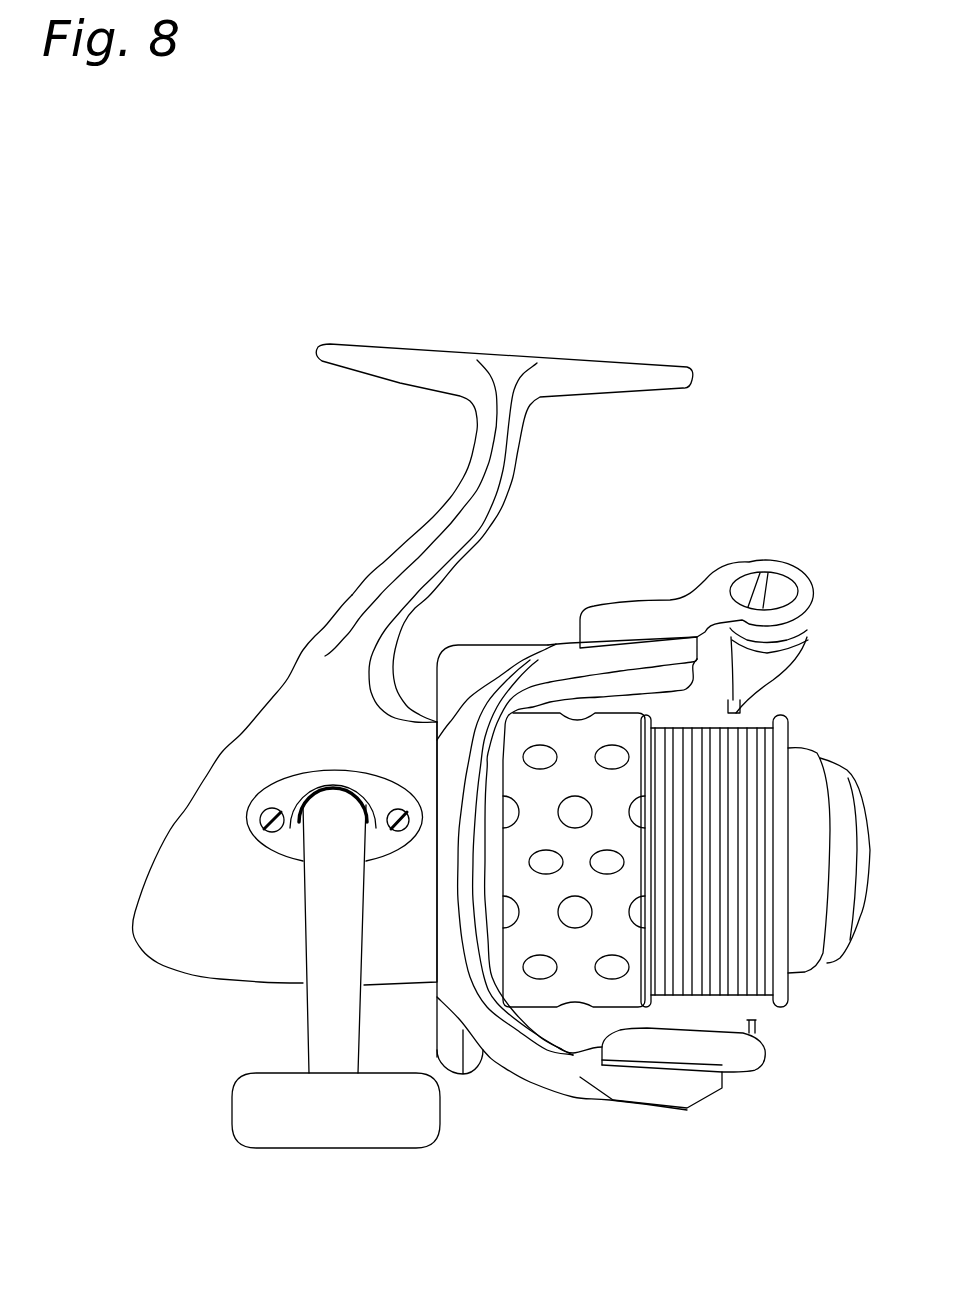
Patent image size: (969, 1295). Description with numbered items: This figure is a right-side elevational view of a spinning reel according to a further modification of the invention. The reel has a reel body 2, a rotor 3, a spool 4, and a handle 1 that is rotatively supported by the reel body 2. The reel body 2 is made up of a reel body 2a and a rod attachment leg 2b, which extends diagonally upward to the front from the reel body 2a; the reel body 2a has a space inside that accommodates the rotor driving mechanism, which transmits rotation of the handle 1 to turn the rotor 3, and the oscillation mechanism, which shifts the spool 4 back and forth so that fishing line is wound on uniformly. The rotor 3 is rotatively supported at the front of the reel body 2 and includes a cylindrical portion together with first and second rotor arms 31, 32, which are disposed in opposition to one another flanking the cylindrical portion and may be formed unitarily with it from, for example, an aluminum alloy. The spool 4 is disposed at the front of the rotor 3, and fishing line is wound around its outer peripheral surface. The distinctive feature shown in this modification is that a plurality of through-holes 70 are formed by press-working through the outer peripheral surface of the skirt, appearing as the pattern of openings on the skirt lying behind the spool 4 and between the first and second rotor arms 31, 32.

The handle 1 is at (330, 1019).
The reel body 2 is at (412, 664).
The reel body 2a is at (220, 773).
The rod attachment leg 2b is at (320, 617).
The rotor 3 is at (625, 842).
The spool 4 is at (748, 740).
The first rotor arm 31 is at (620, 653).
The second rotor arm 32 is at (630, 1087).
The through-holes 70 is at (577, 927).